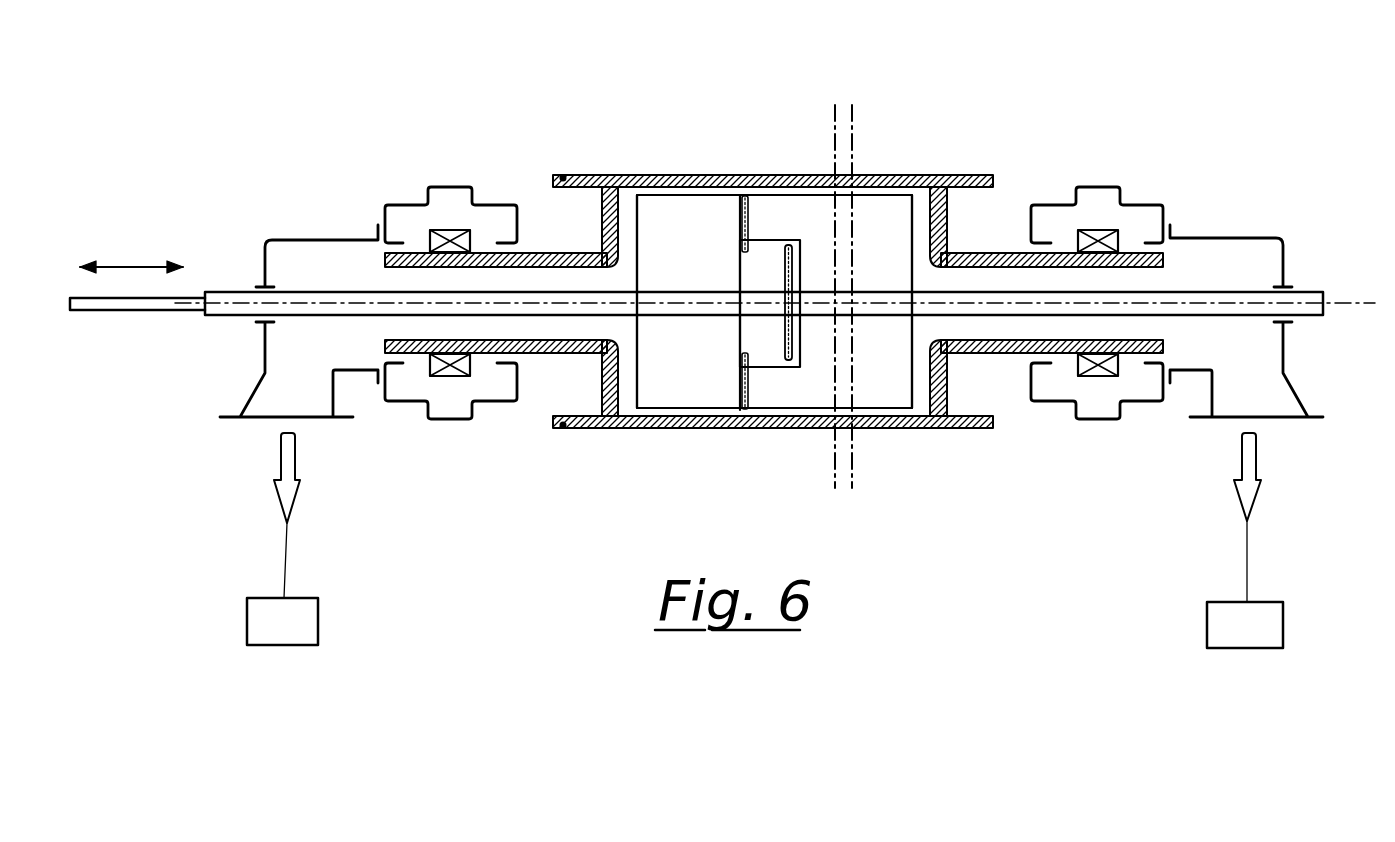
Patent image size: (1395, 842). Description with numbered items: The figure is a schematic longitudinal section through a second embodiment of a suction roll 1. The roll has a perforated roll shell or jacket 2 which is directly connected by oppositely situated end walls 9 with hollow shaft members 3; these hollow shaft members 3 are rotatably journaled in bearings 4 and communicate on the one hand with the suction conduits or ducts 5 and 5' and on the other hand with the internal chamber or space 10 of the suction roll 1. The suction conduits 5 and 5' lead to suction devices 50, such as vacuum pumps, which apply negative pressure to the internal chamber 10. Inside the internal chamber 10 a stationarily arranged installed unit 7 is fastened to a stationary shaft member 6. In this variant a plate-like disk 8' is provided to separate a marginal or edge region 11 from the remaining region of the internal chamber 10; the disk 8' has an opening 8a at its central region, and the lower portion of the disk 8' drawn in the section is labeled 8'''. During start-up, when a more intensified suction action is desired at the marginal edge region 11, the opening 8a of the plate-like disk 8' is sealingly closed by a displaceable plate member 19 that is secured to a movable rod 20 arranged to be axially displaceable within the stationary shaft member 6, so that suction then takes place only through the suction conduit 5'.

The suction roll 1 is at (945, 148).
The perforated roll shell 2 is at (883, 175).
The hollow shaft member 3 is at (992, 248).
The bearing 4 is at (447, 372).
The suction conduit 5 is at (1257, 366).
The suction conduit 5' is at (287, 366).
The stationary shaft member 6 is at (362, 291).
The installed unit 7 is at (787, 215).
The plate-like disk 8' is at (716, 257).
The lower piston seal 8''' is at (707, 431).
The opening 8a is at (737, 277).
The end wall 9 is at (601, 231).
The internal chamber 10 is at (918, 388).
The marginal edge region 11 is at (675, 412).
The displaceable plate member 19 is at (788, 365).
The movable rod 20 is at (190, 298).
The suction device 50 is at (274, 617).